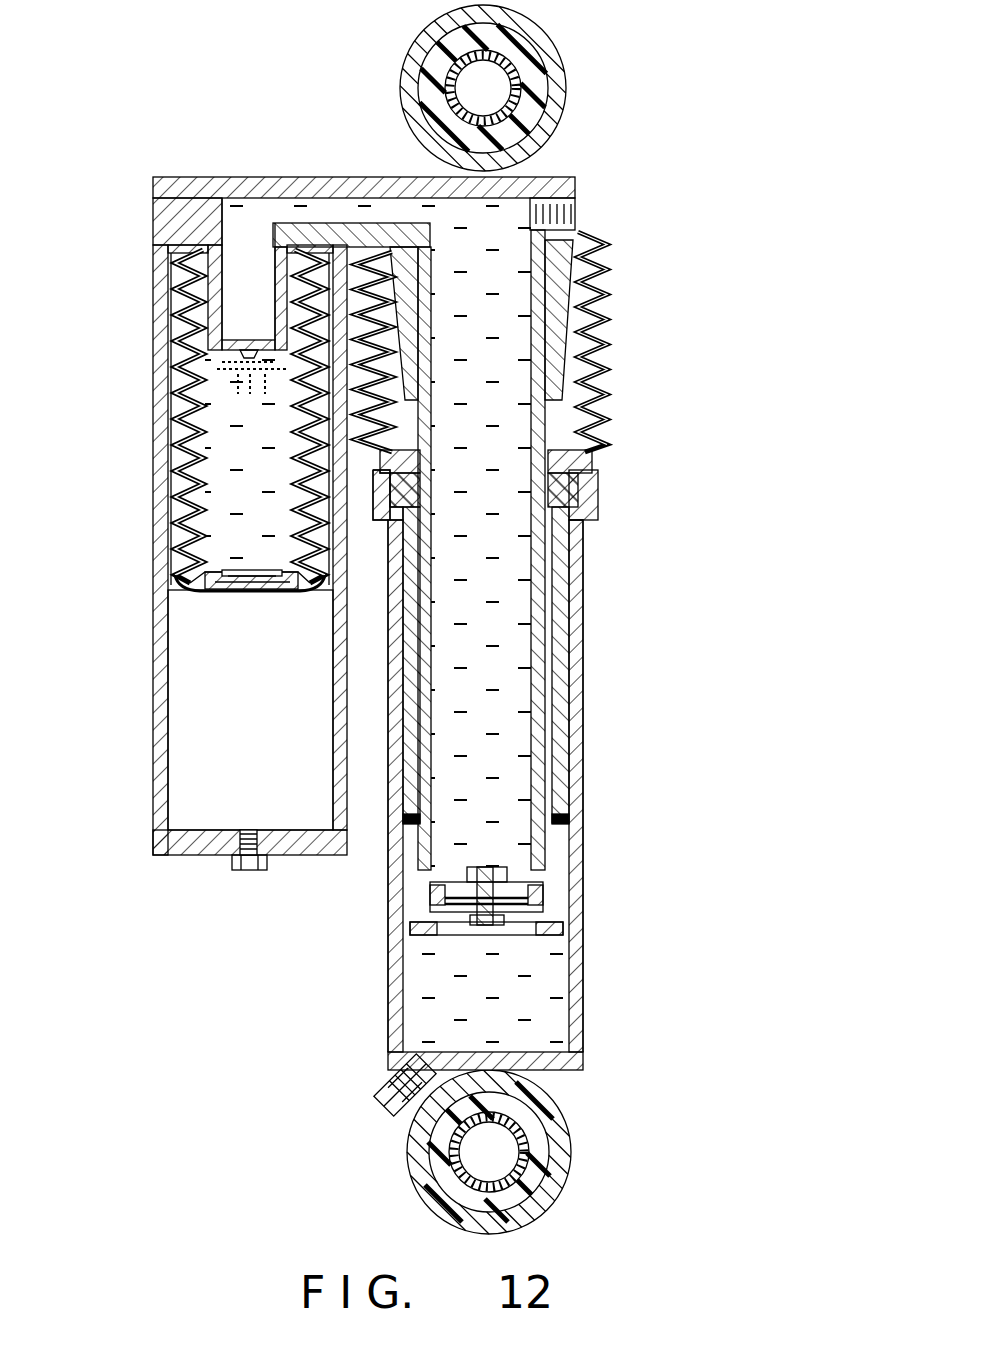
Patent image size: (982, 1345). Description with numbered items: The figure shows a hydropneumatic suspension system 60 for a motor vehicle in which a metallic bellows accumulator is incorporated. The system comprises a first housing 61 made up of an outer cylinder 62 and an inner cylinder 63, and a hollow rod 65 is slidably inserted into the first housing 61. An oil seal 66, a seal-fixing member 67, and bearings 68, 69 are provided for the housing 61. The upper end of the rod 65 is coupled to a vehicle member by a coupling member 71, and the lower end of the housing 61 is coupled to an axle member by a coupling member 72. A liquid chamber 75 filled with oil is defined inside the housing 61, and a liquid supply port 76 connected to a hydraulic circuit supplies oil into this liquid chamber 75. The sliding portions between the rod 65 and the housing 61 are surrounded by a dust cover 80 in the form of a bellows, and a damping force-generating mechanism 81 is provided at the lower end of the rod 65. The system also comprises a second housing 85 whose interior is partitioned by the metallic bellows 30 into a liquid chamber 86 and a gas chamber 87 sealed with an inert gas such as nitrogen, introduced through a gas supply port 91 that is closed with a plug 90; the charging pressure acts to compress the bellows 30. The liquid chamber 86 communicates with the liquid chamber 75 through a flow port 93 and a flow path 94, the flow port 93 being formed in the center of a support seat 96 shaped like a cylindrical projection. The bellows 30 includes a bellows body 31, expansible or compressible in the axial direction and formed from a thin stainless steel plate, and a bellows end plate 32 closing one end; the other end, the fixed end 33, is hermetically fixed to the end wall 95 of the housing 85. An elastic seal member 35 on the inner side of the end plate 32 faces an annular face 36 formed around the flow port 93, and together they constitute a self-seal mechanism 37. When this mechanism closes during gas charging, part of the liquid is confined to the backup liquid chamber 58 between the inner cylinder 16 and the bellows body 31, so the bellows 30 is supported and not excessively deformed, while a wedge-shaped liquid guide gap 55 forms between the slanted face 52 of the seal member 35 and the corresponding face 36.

The hydropneumatic suspension system 60 is at (683, 140).
The coupling member 71 is at (566, 70).
The coupling member 72 is at (580, 1118).
The flow path 94 is at (372, 215).
The end wall 95 is at (178, 228).
The fixed end 33 is at (165, 260).
The inner cylinder 16 is at (166, 300).
The backup liquid chamber 58 is at (170, 330).
The support seat 96 is at (215, 365).
The flow port 93 is at (248, 345).
The annular face 36 is at (249, 391).
The liquid chamber 86 is at (230, 440).
The metallic bellows 30 is at (176, 486).
The slanted face 52 is at (230, 570).
The liquid guide gap 55 is at (268, 574).
The bellows body 31 is at (176, 560).
The self-seal mechanism 37 is at (205, 596).
The elastic seal member 35 is at (240, 592).
The bellows end plate 32 is at (282, 592).
The second housing 85 is at (168, 638).
The gas chamber 87 is at (180, 690).
The gas supply port 91 is at (238, 860).
The plug 90 is at (248, 870).
The liquid supply port 76 is at (578, 218).
The dust cover 80 is at (606, 318).
The hollow rod 65 is at (593, 425).
The seal-fixing member 67 is at (600, 455).
The oil seal 66 is at (575, 500).
The bearing 68 is at (588, 540).
The outer cylinder 62 is at (586, 578).
The inner cylinder 63 is at (560, 620).
The first housing 61 is at (586, 685).
The bearing 69 is at (560, 752).
The damping force-generating mechanism 81 is at (495, 942).
The liquid chamber 75 is at (557, 1025).